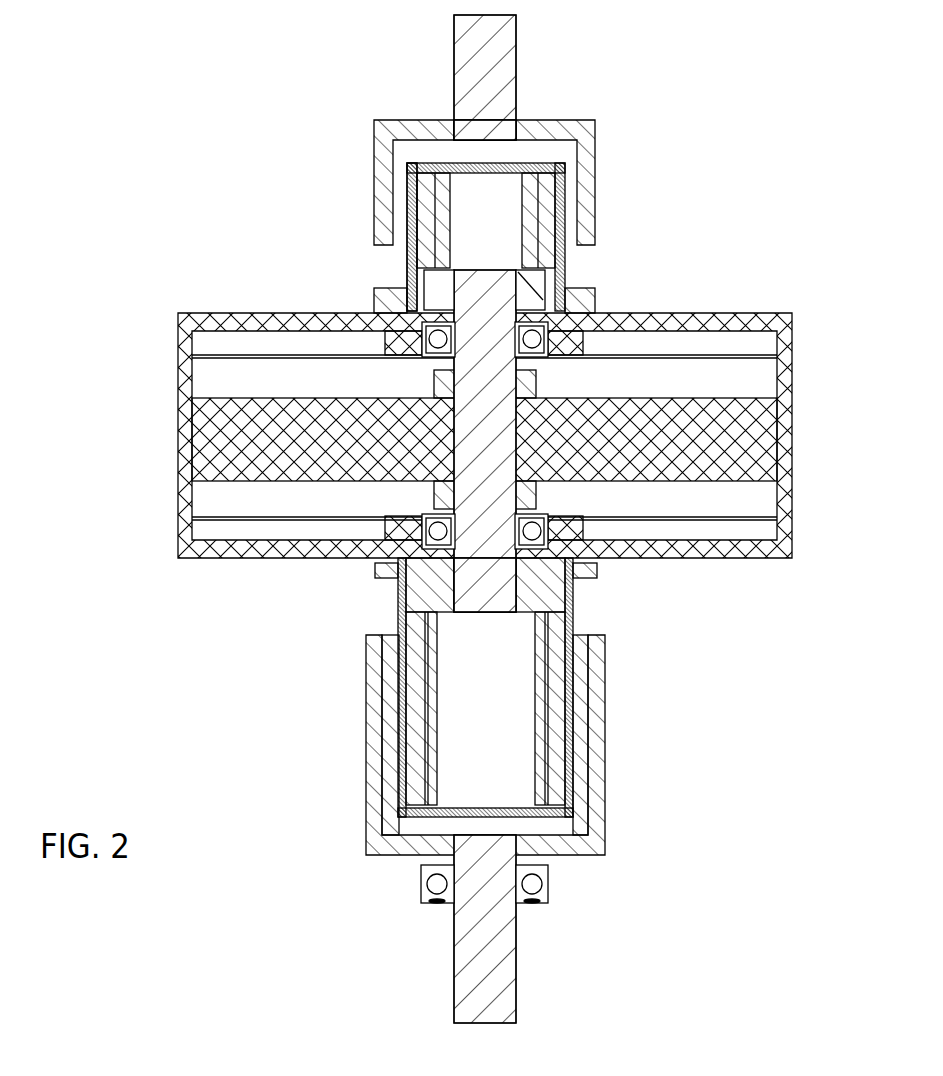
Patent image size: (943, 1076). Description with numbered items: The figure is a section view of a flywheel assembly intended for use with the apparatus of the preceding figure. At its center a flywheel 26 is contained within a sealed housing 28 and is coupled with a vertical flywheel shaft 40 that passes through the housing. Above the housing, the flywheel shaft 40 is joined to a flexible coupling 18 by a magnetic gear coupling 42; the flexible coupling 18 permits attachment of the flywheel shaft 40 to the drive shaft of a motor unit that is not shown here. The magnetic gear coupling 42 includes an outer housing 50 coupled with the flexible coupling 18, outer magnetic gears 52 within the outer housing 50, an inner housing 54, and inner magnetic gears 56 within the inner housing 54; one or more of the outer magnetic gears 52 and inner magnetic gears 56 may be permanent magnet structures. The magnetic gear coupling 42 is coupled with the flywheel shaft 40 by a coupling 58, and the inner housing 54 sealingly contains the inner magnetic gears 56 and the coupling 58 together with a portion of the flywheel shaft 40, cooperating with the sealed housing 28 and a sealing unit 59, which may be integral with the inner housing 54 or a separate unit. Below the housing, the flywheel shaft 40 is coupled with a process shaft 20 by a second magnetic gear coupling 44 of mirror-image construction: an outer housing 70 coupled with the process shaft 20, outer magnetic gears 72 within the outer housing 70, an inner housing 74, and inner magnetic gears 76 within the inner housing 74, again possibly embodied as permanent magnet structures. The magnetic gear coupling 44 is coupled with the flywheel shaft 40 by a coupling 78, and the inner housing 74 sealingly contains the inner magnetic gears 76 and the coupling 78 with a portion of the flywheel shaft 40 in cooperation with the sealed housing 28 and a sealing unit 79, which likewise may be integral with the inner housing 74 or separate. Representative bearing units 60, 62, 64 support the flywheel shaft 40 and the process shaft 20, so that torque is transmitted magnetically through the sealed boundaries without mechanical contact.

The flexible coupling 18 is at (517, 62).
The process shaft 20 is at (517, 964).
The flywheel 26 is at (673, 400).
The sealed housing 28 is at (793, 317).
The flywheel shaft 40 is at (520, 358).
The magnetic gear coupling 42 is at (637, 141).
The magnetic gear coupling 44 is at (657, 718).
The outer housing 50 is at (593, 182).
The outer magnetic gears 52 is at (568, 242).
The inner housing 54 is at (560, 268).
The inner magnetic gears 56 is at (420, 239).
The coupling 58 is at (430, 283).
The sealing unit 59 is at (585, 295).
The bearing unit 60 is at (425, 352).
The bearing unit 62 is at (537, 517).
The bearing unit 64 is at (548, 880).
The outer housing 70 is at (600, 762).
The outer magnetic gears 72 is at (575, 638).
The inner housing 74 is at (572, 598).
The inner magnetic gears 76 is at (410, 635).
The coupling 78 is at (408, 587).
The sealing unit 79 is at (375, 567).